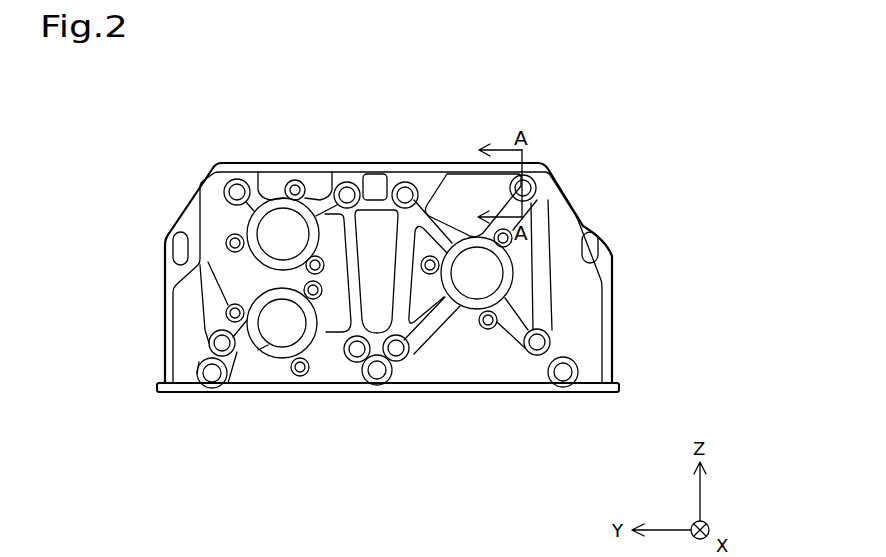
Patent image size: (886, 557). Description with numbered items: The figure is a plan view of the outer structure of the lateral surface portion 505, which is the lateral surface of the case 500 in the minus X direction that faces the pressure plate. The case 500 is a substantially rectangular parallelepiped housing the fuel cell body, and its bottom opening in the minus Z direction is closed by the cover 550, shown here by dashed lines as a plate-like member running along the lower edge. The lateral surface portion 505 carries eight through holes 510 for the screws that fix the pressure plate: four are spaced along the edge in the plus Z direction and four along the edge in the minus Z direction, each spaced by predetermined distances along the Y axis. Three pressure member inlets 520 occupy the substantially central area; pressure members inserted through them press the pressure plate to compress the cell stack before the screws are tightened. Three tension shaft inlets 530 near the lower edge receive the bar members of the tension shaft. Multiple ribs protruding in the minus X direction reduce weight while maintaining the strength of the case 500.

The case 500 is at (587, 221).
The lateral surface portion 505 is at (166, 164).
The through hole 510 is at (237, 188).
The pressure member inlet 520 is at (301, 244).
The tension shaft inlet 530 is at (208, 393).
The cover 550 is at (170, 395).